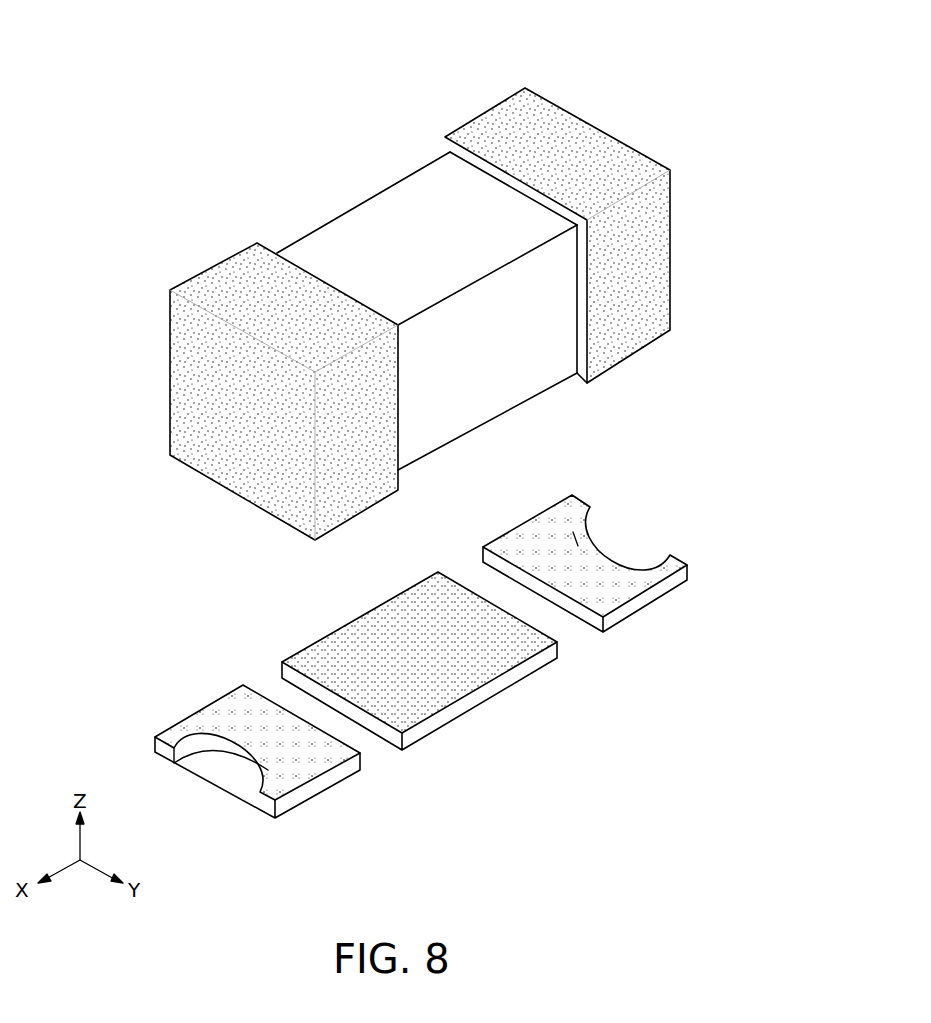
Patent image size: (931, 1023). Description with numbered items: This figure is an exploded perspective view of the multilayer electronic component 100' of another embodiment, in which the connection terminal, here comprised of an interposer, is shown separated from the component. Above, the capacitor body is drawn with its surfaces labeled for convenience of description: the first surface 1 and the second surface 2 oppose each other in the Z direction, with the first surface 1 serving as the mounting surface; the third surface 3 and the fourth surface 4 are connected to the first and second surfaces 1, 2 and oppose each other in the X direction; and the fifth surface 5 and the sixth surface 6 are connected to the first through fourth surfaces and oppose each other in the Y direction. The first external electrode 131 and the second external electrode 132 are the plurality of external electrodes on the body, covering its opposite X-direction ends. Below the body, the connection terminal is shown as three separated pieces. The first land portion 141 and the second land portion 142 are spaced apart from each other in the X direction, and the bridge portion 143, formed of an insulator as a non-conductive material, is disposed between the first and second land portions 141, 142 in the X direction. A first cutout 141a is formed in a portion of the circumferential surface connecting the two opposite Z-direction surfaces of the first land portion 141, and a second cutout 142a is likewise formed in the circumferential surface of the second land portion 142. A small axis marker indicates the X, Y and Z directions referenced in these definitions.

The multilayer electronic component 100' is at (417, 278).
The first surface 1 is at (507, 379).
The second surface 2 is at (404, 202).
The third surface 3 is at (227, 401).
The fourth surface 4 is at (656, 247).
The fifth surface 5 is at (542, 327).
The sixth surface 6 is at (358, 243).
The first external electrode 131 is at (230, 282).
The second external electrode 132 is at (497, 126).
The first land portion 141 is at (236, 714).
The first cutout 141a is at (252, 754).
The second land portion 142 is at (690, 575).
The second cutout 142a is at (588, 527).
The bridge portion 143 is at (432, 704).